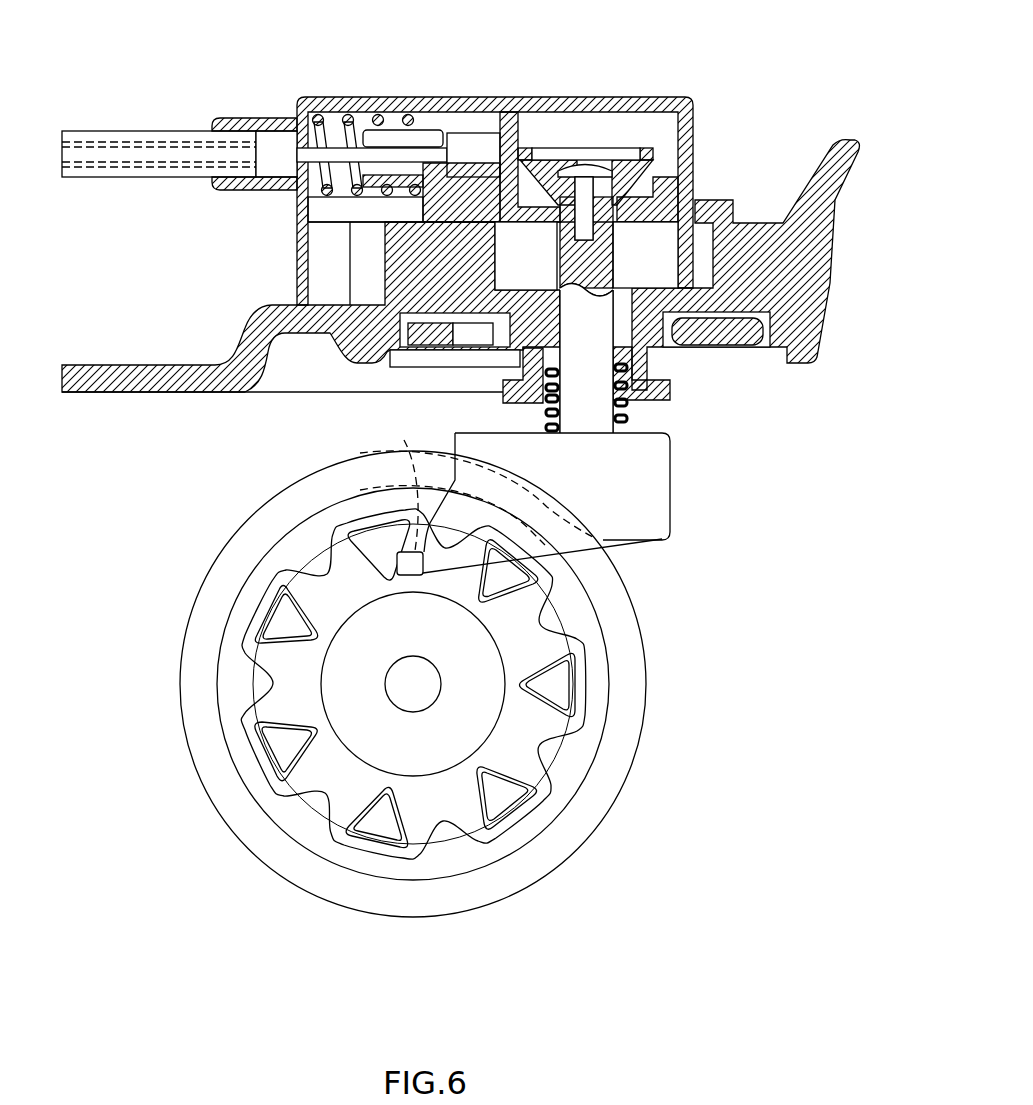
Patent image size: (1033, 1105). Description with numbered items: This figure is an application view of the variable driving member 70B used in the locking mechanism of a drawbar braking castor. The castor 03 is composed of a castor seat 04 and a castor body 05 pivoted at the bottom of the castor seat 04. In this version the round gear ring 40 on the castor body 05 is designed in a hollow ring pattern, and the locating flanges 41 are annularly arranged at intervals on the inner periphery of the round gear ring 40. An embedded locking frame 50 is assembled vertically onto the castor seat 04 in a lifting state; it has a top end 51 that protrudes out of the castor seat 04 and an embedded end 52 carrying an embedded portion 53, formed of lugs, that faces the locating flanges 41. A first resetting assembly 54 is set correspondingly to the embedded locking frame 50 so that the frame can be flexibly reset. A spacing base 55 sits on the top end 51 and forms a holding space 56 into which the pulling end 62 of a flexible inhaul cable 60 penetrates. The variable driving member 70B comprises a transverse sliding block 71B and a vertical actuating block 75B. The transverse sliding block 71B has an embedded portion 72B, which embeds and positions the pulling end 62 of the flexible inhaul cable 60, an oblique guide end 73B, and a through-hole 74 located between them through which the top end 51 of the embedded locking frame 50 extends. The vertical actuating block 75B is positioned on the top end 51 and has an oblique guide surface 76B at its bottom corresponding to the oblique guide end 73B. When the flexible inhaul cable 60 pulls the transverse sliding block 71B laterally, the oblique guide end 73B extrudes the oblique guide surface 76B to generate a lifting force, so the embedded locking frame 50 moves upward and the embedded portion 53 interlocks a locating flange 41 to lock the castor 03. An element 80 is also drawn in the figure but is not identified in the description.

The flexible inhaul cable 60 is at (84, 131).
The compression spring 80 is at (318, 117).
The pulling end 62 is at (458, 135).
The embedded portion 72B is at (480, 128).
The spacing base 55 is at (530, 125).
The transverse sliding block 71B is at (517, 137).
The variable driving member 70B is at (652, 136).
The vertical actuating block 75B is at (653, 180).
The oblique guide end 73B is at (655, 174).
The oblique guide surface 76B is at (640, 197).
The top end 51 is at (697, 210).
The holding space 56 is at (342, 213).
The through-hole 74 is at (600, 234).
The first resetting assembly 54 is at (628, 417).
The embedded locking frame 50 is at (676, 501).
The embedded portion 53 is at (476, 489).
The locating flange 41 is at (359, 530).
The embedded end 52 is at (545, 600).
The round gear ring 40 is at (575, 760).
The castor 03 is at (112, 477).
The castor seat 04 is at (181, 393).
The castor body 05 is at (237, 530).